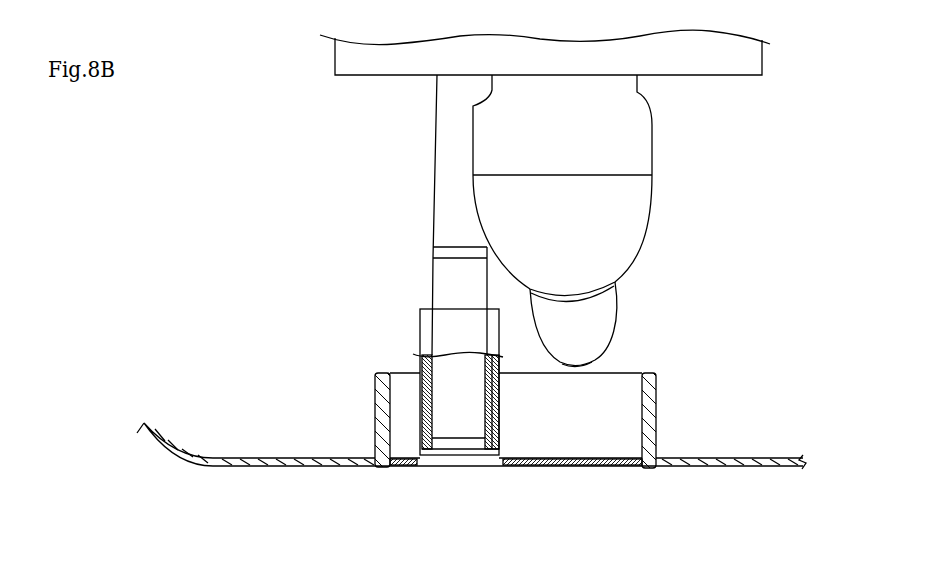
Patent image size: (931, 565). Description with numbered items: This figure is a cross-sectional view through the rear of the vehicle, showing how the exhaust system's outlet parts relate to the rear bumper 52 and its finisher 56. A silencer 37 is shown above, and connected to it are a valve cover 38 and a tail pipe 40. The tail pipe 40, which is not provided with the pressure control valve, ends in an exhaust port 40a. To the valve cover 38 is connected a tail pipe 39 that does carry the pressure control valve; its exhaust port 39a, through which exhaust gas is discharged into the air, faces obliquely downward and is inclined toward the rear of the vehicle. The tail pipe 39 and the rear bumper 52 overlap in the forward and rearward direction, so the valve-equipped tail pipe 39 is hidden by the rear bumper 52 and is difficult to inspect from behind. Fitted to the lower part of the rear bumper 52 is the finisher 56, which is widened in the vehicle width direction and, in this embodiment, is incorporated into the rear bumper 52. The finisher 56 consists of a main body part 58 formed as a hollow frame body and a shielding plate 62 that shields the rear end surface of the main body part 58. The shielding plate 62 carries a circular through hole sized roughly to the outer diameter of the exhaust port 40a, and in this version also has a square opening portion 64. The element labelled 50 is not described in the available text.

The silencer 37 is at (707, 63).
The valve cover 38 is at (640, 203).
The tail pipe 39 is at (608, 323).
The exhaust port 39a is at (600, 363).
The tail pipe 40 is at (430, 326).
The exhaust port 40a is at (483, 434).
The plunger stem 50 is at (423, 343).
The rear bumper 52 is at (298, 470).
The finisher 56 is at (372, 421).
The main body part 58 is at (657, 438).
The shielding plate 62 is at (553, 466).
The square opening portion 64 is at (422, 465).